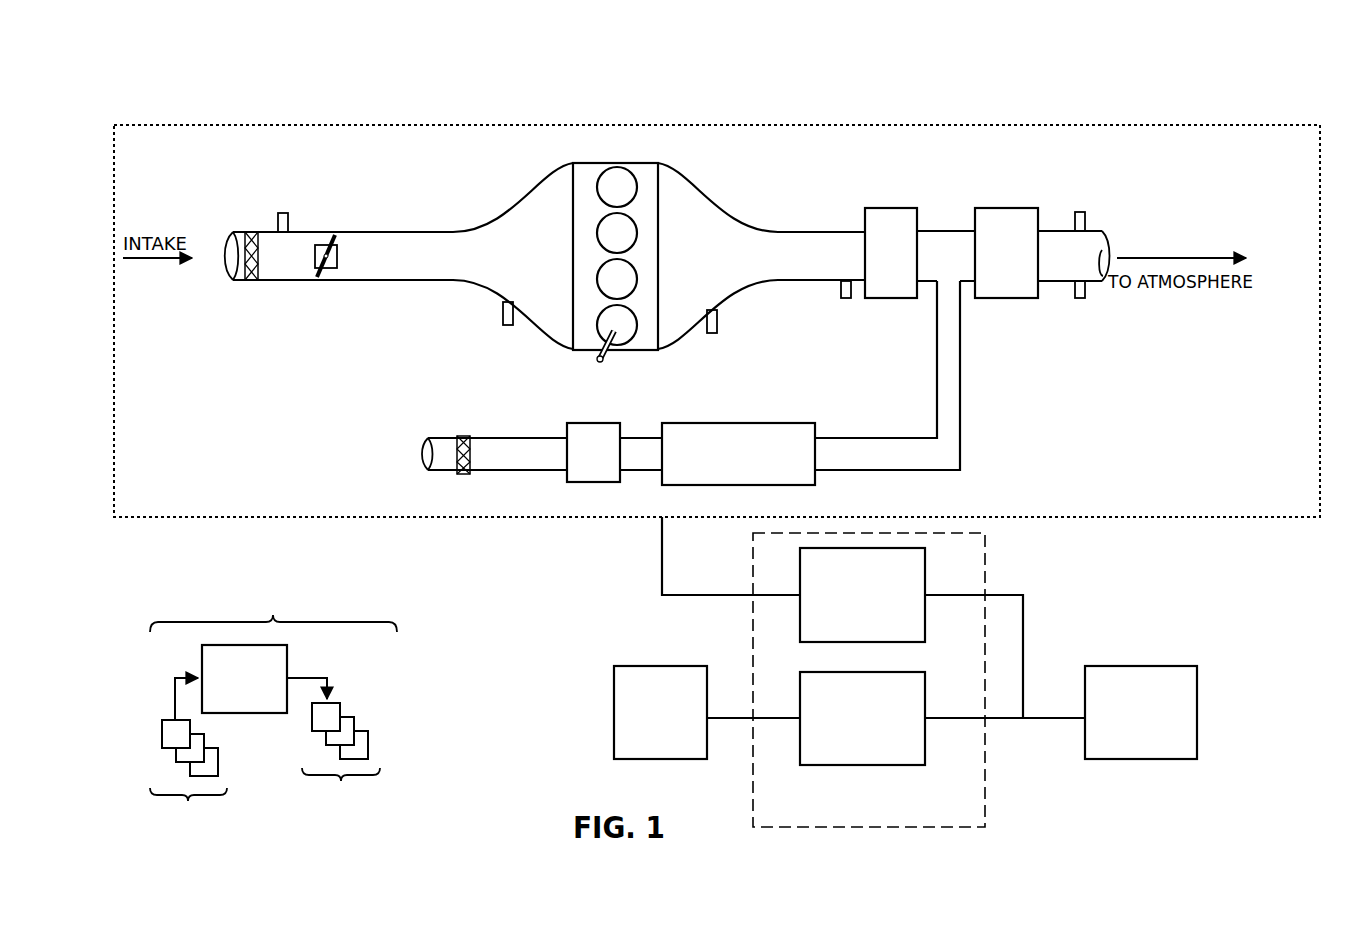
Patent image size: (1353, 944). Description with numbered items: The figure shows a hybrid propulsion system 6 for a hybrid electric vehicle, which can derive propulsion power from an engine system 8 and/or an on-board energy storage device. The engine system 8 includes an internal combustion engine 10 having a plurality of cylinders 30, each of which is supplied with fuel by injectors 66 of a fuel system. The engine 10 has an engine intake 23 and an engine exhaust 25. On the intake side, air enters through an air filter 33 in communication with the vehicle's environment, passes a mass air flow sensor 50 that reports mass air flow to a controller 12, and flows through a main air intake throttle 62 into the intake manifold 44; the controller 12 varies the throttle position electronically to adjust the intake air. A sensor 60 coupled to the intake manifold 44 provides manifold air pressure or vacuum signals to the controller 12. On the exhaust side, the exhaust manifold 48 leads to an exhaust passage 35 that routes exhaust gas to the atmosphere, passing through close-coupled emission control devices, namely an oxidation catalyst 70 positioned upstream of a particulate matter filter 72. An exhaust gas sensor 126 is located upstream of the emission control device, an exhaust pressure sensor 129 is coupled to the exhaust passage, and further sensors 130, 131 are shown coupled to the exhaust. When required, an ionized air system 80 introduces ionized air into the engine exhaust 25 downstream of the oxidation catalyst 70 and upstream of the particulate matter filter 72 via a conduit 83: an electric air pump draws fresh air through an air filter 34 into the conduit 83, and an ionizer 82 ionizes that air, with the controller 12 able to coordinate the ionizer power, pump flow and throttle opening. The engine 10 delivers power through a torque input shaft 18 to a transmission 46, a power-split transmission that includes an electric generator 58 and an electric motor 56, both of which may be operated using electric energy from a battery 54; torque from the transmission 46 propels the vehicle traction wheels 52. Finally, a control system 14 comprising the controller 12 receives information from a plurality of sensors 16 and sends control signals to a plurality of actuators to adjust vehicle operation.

The hybrid propulsion system 6 is at (143, 78).
The engine system 8 is at (1143, 125).
The internal combustion engine 10 is at (630, 256).
The controller 12 is at (244, 679).
The control system 14 is at (273, 705).
The sensors 16 is at (188, 760).
The torque input shaft 18 is at (662, 541).
The engine intake 23 is at (509, 188).
The engine exhaust 25 is at (757, 197).
The cylinders 30 is at (634, 181).
The air filter 33 is at (257, 231).
The air filter 34 is at (462, 436).
The exhaust passage 35 is at (1090, 231).
The intake manifold 44 is at (399, 256).
The transmission 46 is at (986, 538).
The exhaust manifold 48 is at (880, 256).
The mass air flow sensor 50 is at (278, 228).
The traction wheels 52 is at (1141, 712).
The battery 54 is at (660, 712).
The electric motor 56 is at (862, 718).
The electric generator 58 is at (862, 595).
The manifold pressure sensor 60 is at (503, 312).
The main air intake throttle 62 is at (337, 251).
The fuel injector 66 is at (604, 361).
The oxidation catalyst 70 is at (891, 253).
The particulate matter filter 72 is at (1006, 253).
The ionized air system 80 is at (551, 418).
The ionizer 82 is at (738, 454).
The conduit 83 is at (960, 371).
The exhaust gas sensor 126 is at (717, 318).
The exhaust pressure sensor 129 is at (1075, 226).
The exhaust temperature sensor 130 is at (841, 290).
The tailpipe sensor 131 is at (1075, 290).